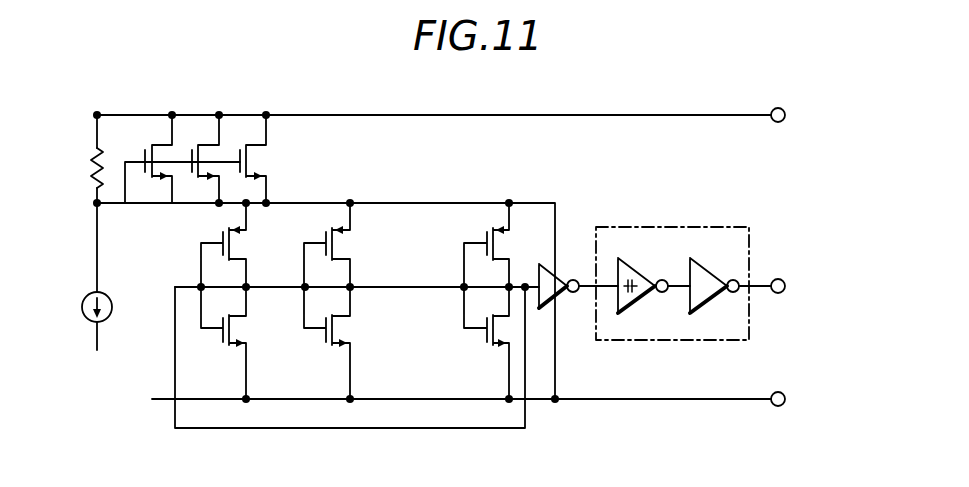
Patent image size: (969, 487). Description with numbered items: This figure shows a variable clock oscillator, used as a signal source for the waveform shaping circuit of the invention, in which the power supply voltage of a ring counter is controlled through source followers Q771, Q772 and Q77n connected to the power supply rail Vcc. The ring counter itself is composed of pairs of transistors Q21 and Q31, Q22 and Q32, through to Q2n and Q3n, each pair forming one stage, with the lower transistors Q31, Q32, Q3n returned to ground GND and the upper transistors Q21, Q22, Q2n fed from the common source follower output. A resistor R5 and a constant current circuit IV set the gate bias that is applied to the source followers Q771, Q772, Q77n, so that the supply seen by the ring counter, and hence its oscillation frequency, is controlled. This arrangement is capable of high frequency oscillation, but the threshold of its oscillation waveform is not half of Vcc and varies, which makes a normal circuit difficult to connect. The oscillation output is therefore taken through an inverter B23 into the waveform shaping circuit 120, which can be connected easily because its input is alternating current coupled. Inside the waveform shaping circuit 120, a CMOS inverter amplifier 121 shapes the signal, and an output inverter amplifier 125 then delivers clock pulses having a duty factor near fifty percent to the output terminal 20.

The resistor R5 is at (76, 157).
The constant current circuit IV is at (88, 296).
The source follower Q771 is at (146, 148).
The source follower Q772 is at (193, 148).
The source follower Q77n is at (268, 176).
The transistor Q21 is at (221, 241).
The transistor Q22 is at (324, 241).
The transistor Q2n is at (486, 241).
The transistor Q31 is at (220, 338).
The transistor Q32 is at (323, 338).
The transistor Q3n is at (482, 338).
The inverter B23 is at (565, 270).
The waveform shaping circuit 120 is at (684, 227).
The inverter amplifier 121 is at (641, 275).
The output inverter amplifier 125 is at (713, 275).
The output terminal 20 is at (780, 279).
The power supply voltage Vcc is at (784, 107).
The ground GND is at (784, 391).